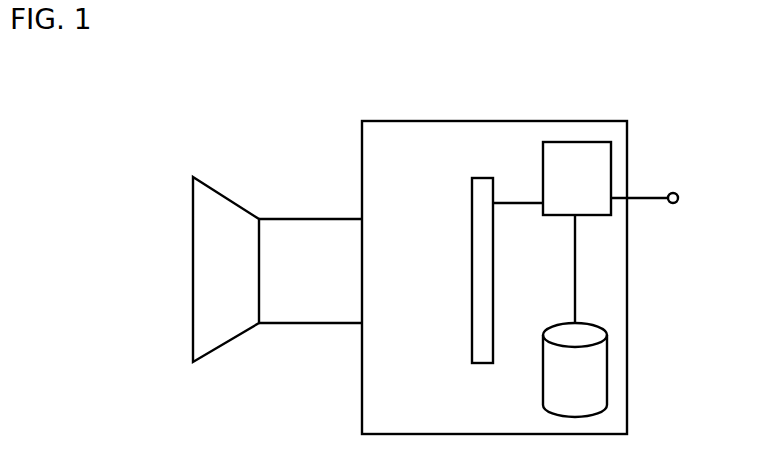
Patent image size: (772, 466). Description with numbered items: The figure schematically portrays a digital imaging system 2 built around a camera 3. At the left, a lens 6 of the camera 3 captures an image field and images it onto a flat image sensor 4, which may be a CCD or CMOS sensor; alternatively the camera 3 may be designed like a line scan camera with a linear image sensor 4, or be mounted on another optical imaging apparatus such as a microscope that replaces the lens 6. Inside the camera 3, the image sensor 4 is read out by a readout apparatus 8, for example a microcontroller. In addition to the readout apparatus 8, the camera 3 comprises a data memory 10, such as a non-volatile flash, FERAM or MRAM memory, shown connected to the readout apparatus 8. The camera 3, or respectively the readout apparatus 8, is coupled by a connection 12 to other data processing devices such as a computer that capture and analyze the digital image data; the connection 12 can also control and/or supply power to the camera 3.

The digital imaging system 2 is at (660, 68).
The camera 3 is at (547, 121).
The image sensor 4 is at (494, 197).
The lens 6 is at (292, 219).
The readout apparatus 8 is at (611, 173).
The data memory 10 is at (607, 362).
The connection 12 is at (689, 193).